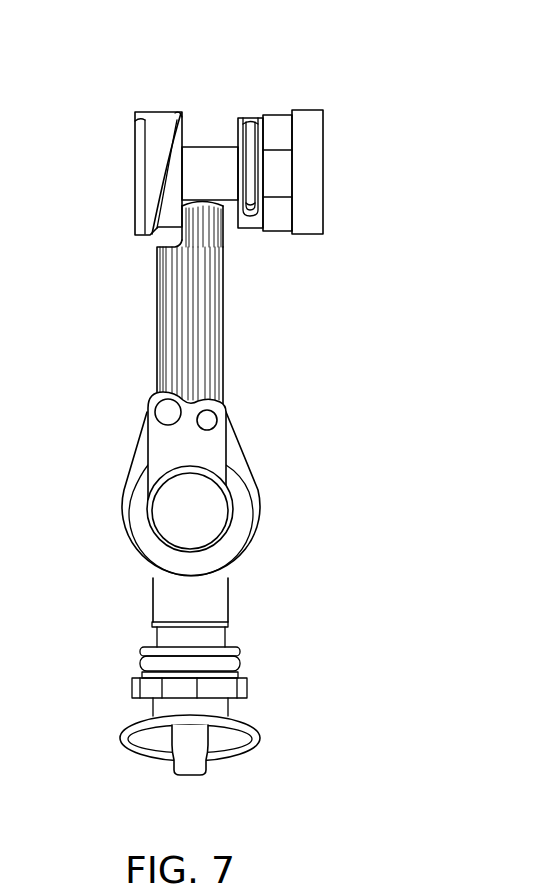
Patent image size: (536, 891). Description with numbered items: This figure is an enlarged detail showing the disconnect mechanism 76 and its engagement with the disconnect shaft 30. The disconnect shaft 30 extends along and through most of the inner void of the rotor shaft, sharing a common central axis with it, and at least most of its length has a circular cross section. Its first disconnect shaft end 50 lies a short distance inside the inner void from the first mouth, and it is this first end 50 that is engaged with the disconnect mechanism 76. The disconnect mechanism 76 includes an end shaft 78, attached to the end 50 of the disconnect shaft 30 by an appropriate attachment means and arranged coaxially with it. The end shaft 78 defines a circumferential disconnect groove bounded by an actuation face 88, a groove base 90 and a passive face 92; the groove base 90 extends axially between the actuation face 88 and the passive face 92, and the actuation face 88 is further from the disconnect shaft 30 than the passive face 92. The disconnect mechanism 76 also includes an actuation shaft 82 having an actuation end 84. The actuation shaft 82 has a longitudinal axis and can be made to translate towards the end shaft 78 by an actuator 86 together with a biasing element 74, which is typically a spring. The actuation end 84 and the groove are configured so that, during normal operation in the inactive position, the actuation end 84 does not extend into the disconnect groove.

The disconnect shaft 30 is at (341, 162).
The first disconnect shaft end 50 is at (301, 110).
The biasing element 74 is at (213, 595).
The disconnect mechanism 76 is at (291, 460).
The end shaft 78 is at (163, 198).
The actuation shaft 82 is at (205, 355).
The actuation end 84 is at (213, 237).
The actuator 86 is at (187, 493).
The actuation face 88 is at (182, 117).
The groove base 90 is at (200, 147).
The passive face 92 is at (237, 132).